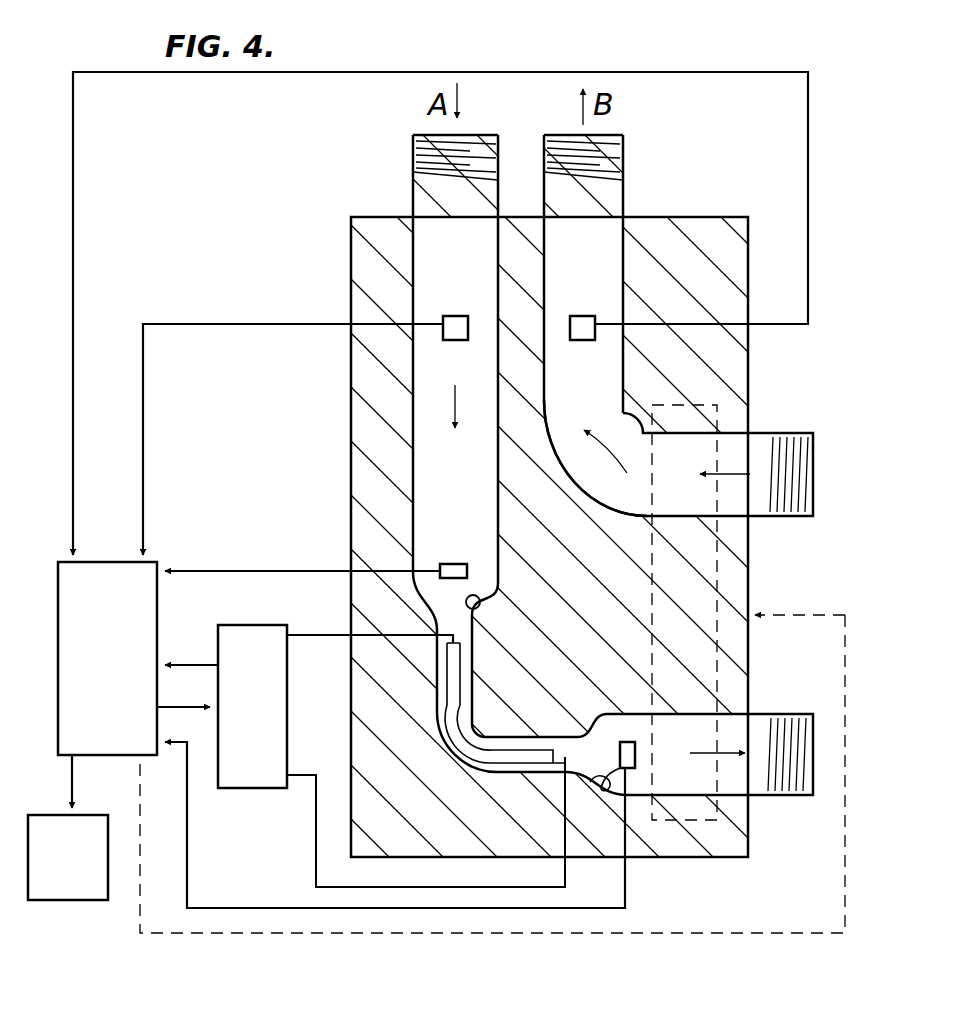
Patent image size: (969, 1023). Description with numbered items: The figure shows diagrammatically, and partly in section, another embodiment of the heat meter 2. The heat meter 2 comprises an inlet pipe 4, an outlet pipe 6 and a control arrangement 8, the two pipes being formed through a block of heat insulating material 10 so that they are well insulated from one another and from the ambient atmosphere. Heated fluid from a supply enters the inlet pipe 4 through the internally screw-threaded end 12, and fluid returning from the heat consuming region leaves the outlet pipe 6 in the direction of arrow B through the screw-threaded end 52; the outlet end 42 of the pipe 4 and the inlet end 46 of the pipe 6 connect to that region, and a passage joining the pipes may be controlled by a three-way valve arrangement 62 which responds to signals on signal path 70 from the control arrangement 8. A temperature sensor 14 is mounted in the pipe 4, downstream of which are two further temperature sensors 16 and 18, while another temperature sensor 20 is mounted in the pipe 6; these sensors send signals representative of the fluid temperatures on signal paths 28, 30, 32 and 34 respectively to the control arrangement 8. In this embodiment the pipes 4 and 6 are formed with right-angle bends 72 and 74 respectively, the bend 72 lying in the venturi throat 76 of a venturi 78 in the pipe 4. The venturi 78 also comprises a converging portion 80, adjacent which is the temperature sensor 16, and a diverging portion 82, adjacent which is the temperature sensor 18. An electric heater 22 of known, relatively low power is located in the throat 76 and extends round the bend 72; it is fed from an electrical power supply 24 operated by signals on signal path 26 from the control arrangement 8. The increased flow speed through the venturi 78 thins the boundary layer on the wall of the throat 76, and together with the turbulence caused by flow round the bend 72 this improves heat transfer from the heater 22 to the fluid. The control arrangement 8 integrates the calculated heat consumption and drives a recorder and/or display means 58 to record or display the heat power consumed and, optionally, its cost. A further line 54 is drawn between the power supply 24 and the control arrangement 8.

The heat meter 2 is at (145, 68).
The inlet pipe 4 is at (430, 200).
The outlet pipe 6 is at (605, 212).
The control arrangement 8 is at (107, 658).
The block of heat insulating material 10 is at (357, 406).
The inlet end of inlet pipe 12 is at (418, 150).
The temperature sensor 14 is at (455, 318).
The temperature sensor 16 is at (452, 565).
The temperature sensor 18 is at (635, 755).
The temperature sensor 20 is at (580, 318).
The electric heater 22 is at (495, 778).
The electrical power supply 24 is at (252, 706).
The signal path 26 is at (185, 707).
The signal path 28 is at (222, 324).
The signal path 30 is at (255, 571).
The signal path 32 is at (187, 858).
The signal path 34 is at (258, 73).
The outlet end of inlet pipe 42 is at (780, 712).
The inlet end of outlet pipe 46 is at (797, 433).
The outlet end of outlet pipe 52 is at (615, 143).
The analyser line 54 is at (197, 665).
The recorder and/or display means 58 is at (68, 827).
The three-way valve arrangement 62 is at (717, 557).
The signal path 70 is at (683, 933).
The right-angle bend 72 is at (448, 772).
The right-angle bend 74 is at (567, 488).
The venturi throat 76 is at (468, 697).
The venturi 78 is at (480, 668).
The converging portion 80 is at (480, 608).
The diverging portion 82 is at (605, 790).